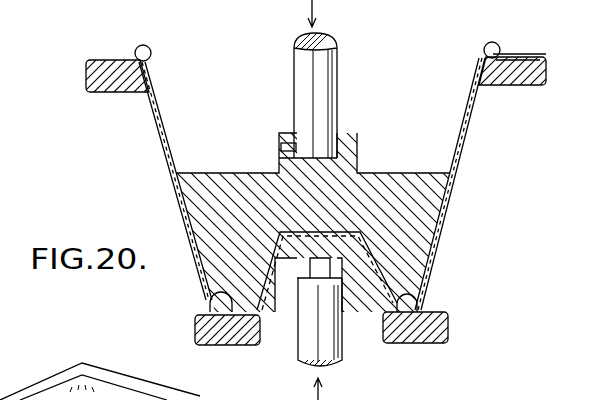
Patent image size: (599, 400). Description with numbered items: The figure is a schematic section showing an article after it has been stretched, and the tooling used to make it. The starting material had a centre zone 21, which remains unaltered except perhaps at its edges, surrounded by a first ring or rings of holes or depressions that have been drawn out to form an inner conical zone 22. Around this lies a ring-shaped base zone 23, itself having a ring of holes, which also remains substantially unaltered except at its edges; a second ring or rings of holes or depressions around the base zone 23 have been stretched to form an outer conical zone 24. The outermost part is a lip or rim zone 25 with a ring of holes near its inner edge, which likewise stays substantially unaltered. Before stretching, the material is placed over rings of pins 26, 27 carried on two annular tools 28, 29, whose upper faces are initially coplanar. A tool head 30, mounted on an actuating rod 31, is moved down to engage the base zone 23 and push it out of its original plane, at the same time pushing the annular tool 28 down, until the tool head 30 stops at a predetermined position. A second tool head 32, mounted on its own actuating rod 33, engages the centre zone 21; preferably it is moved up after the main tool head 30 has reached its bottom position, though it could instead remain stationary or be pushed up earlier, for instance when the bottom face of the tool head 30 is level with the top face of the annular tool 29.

The centre zone 21 is at (290, 232).
The inner conical zone 22 is at (437, 250).
The base zone 23 is at (435, 345).
The outer conical zone 24 is at (468, 140).
The lip or rim zone 25 is at (514, 55).
The pins 26 is at (207, 296).
The pins 27 is at (137, 50).
The annular tool 28 is at (198, 325).
The annular tool 29 is at (520, 78).
The tool head 30 is at (212, 207).
The actuating rod 31 is at (327, 80).
The second tool head 32 is at (345, 265).
The actuating rod 33 is at (337, 340).